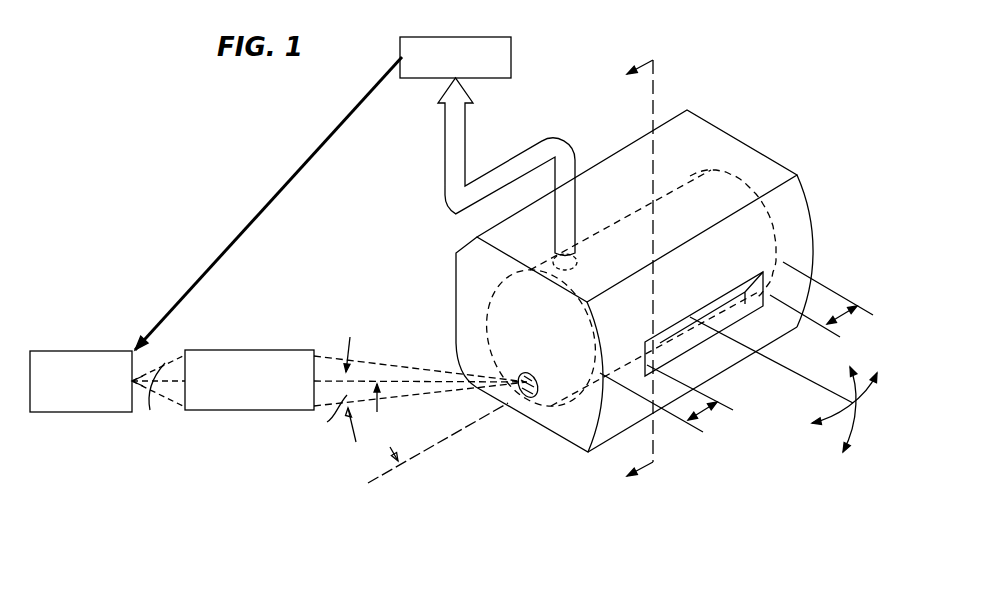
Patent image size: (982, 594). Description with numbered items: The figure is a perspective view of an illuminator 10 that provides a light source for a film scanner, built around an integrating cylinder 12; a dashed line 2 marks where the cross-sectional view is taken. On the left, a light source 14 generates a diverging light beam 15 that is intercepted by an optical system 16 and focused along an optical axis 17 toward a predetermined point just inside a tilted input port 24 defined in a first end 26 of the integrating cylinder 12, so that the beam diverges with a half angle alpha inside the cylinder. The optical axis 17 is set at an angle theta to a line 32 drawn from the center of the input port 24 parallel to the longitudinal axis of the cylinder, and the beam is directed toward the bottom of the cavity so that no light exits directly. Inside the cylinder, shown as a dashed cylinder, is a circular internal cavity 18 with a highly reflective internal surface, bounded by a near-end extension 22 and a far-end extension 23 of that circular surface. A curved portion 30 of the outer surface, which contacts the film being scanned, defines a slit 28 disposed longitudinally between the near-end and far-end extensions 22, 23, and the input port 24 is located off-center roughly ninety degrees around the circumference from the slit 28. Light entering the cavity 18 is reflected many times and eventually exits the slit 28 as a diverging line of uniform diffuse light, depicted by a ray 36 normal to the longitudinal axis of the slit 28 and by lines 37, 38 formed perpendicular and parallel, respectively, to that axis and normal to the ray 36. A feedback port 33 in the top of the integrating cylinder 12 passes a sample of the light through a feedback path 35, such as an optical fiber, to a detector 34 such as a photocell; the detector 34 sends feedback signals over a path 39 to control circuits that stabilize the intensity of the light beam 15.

The dashed line 2— 2 is at (629, 280).
The illuminator 10 is at (289, 98).
The integrating cylinder 12 is at (722, 131).
The light source 14 is at (75, 351).
The diverging light beam 15 is at (150, 410).
The optical system 16 is at (272, 350).
The optical axis 17 is at (390, 379).
The circular internal cavity 18 is at (737, 175).
The near-end extension 22 is at (705, 412).
The far-end extension 23 is at (845, 315).
The tilted input port 24 is at (522, 400).
The first end 26 is at (478, 262).
The slit 28 is at (703, 306).
The curved portion 30 is at (796, 190).
The line 32 is at (390, 471).
The feedback port 33 is at (590, 244).
The detector 34 is at (512, 55).
The feedback path 35 is at (511, 158).
The ray 36 is at (797, 375).
The line 37 is at (846, 370).
The line 38 is at (822, 424).
The path 39 is at (280, 177).